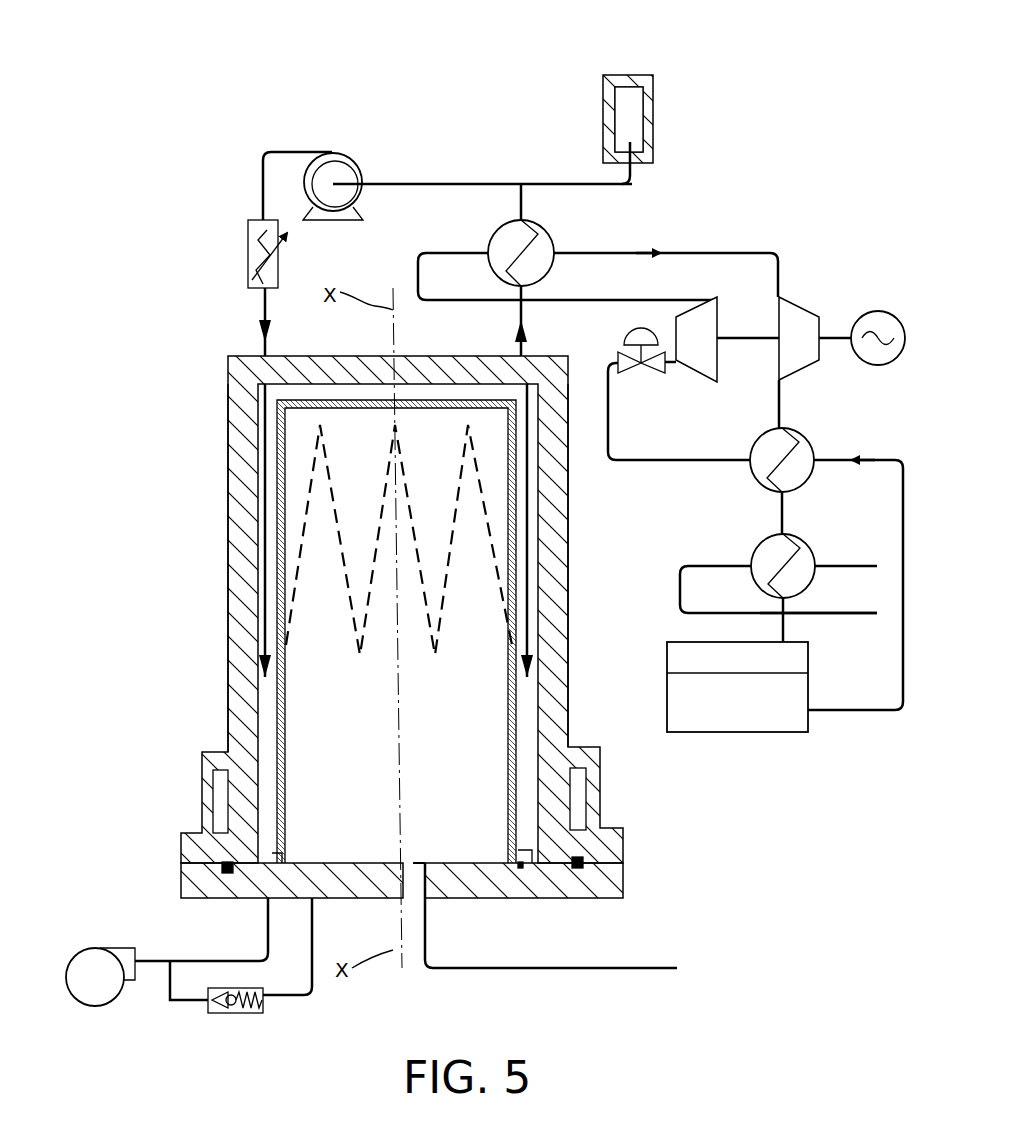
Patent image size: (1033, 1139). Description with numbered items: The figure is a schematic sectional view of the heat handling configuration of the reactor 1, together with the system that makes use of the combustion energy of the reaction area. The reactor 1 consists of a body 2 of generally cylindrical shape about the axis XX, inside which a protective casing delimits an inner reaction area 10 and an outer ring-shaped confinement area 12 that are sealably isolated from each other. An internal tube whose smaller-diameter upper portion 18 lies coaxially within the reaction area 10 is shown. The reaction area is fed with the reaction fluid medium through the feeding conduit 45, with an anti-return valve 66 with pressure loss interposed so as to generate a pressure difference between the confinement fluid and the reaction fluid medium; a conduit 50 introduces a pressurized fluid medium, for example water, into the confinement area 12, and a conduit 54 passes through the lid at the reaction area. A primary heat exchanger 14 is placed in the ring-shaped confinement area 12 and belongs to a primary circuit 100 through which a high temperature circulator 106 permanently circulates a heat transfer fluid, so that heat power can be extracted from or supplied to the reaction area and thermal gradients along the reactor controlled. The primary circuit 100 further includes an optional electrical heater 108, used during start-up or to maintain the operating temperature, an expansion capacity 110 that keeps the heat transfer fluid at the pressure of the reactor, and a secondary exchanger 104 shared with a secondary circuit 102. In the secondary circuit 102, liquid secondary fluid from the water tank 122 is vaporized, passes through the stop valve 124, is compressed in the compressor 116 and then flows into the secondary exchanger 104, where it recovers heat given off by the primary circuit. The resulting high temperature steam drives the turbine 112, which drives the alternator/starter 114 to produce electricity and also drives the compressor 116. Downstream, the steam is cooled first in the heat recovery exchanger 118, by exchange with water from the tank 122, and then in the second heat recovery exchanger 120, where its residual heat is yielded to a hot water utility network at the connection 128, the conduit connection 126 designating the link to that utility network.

The primary circuit 100 is at (388, 86).
The reactor 1 is at (572, 628).
The body 2 is at (545, 513).
The reaction area 10 is at (357, 733).
The confinement area 12 is at (268, 726).
The primary heat exchanger 14 is at (275, 520).
The upper portion 18 is at (343, 463).
The feeding conduit 45 is at (313, 990).
The conduit 50 is at (178, 958).
The conduit 54 is at (627, 965).
The anti-return valve 66 is at (238, 1015).
The secondary circuit 102 is at (690, 243).
The secondary exchanger 104 is at (498, 238).
The high temperature circulator 106 is at (355, 165).
The electrical heater 108 is at (248, 235).
The expansion capacity 110 is at (603, 112).
The turbine 112 is at (790, 310).
The alternator/starter 114 is at (873, 320).
The compressor 116 is at (708, 323).
The heat recovery exchanger 118 is at (803, 452).
The second heat recovery exchanger 120 is at (762, 558).
The water tank 122 is at (735, 727).
The stop valve 124 is at (628, 372).
The conduit connection 126 is at (830, 617).
The connection 128 is at (830, 562).